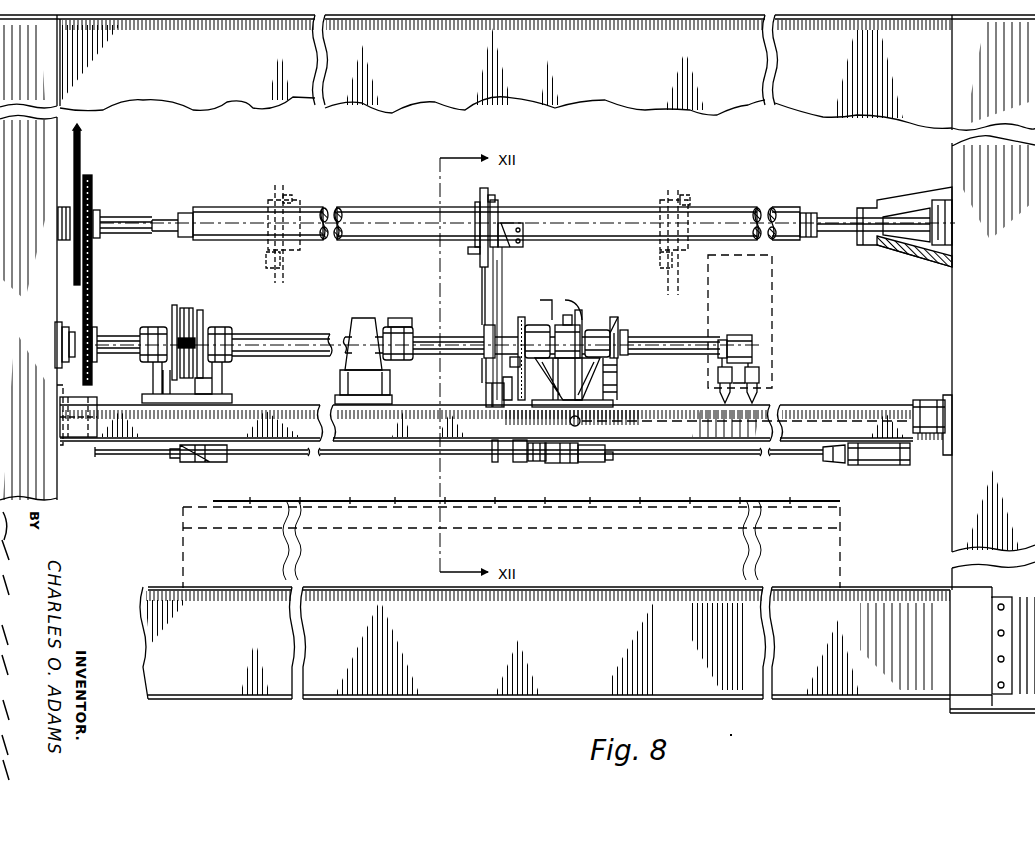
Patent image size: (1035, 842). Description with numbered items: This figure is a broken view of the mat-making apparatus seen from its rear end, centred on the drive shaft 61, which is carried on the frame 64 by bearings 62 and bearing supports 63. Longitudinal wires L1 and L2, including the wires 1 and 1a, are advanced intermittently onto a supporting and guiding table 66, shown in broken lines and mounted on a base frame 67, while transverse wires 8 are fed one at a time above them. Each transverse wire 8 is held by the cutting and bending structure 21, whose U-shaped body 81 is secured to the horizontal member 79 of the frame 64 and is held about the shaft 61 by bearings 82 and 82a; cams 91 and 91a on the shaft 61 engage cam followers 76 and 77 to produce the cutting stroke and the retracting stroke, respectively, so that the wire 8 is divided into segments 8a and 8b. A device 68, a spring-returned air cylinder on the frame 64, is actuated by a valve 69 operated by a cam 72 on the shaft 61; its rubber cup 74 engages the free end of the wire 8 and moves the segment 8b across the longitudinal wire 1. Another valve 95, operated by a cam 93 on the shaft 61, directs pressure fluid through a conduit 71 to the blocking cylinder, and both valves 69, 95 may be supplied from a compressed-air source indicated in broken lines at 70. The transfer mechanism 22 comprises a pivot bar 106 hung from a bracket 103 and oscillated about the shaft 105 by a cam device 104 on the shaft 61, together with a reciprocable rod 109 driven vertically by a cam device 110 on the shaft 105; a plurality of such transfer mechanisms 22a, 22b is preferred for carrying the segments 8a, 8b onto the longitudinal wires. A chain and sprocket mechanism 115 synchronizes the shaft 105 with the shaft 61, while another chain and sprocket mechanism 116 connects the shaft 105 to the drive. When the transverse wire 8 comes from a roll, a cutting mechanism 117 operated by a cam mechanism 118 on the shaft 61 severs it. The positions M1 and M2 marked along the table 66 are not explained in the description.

The longitudinal wire 1 is at (535, 508).
The longitudinal wire 1a is at (572, 508).
The transverse wire 8 is at (478, 458).
The cut segment of transverse wire 8a is at (322, 500).
The segment of transverse wire 8b is at (663, 502).
The cutting and bending structure 21 is at (552, 295).
The transfer mechanism 22 is at (472, 284).
The control element 22a is at (270, 285).
The control element 22b is at (686, 300).
The drive shaft 61 is at (287, 335).
The bearings 62 is at (222, 337).
The bearing supports 63 is at (226, 395).
The frame 64 is at (58, 470).
The table 66 is at (183, 510).
The base frame 67 is at (878, 590).
The air cylinder device 68 is at (880, 465).
The valve 69 is at (758, 380).
The source of pressure fluid 70 is at (774, 262).
The conduit 71 is at (648, 408).
The cam 72 is at (752, 347).
The cup 74 is at (838, 463).
The cam follower 76 is at (617, 310).
The cam follower 77 is at (563, 378).
The horizontal member 79 is at (285, 410).
The U-shaped body 81 is at (616, 388).
The bearing 82 is at (602, 328).
The bearing 82a is at (535, 323).
The cam 91 is at (588, 300).
The cam 91a is at (547, 315).
The cam 93 is at (720, 370).
The valve 95 is at (718, 385).
The bracket 103 is at (497, 232).
The cam device 104 is at (481, 320).
The shaft 105 is at (615, 222).
The pivot bar 106 is at (505, 265).
The reciprocable rod 109 is at (485, 332).
The cam device 110 is at (477, 212).
The chain and sprocket mechanism 115 is at (92, 300).
The chain and sprocket mechanism 116 is at (80, 128).
The cutting mechanism 117 is at (195, 465).
The cam mechanism 118 is at (186, 300).
The longitudinal wire L1 is at (368, 508).
The longitudinal wire L2 is at (660, 507).
The mark M1 is at (258, 508).
The mark M2 is at (728, 508).